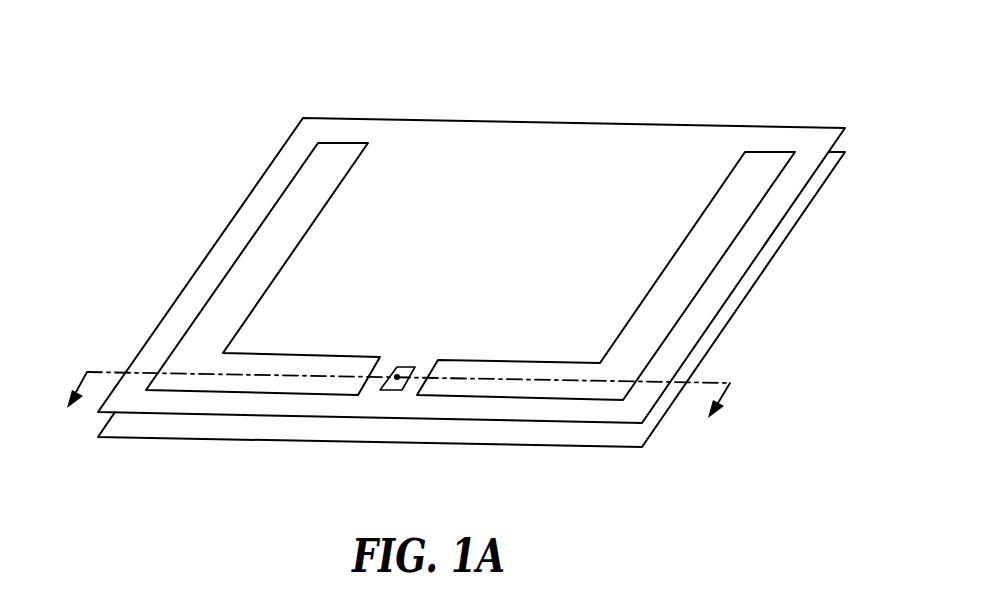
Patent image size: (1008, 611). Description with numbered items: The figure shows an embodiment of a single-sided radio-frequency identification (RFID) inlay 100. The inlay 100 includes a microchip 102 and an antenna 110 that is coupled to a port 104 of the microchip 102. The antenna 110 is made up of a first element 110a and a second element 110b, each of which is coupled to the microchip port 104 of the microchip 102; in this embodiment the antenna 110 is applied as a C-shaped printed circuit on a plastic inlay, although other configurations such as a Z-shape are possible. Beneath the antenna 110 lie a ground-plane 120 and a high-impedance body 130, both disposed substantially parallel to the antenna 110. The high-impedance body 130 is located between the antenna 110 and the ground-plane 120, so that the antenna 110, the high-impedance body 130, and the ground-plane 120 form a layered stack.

The RFID inlay 100 is at (197, 115).
The microchip 102 is at (396, 374).
The port 104 is at (401, 368).
The antenna 110 is at (436, 271).
The first element 110a is at (272, 245).
The second element 110b is at (708, 233).
The ground-plane 120 is at (797, 227).
The high-impedance body 130 is at (815, 137).